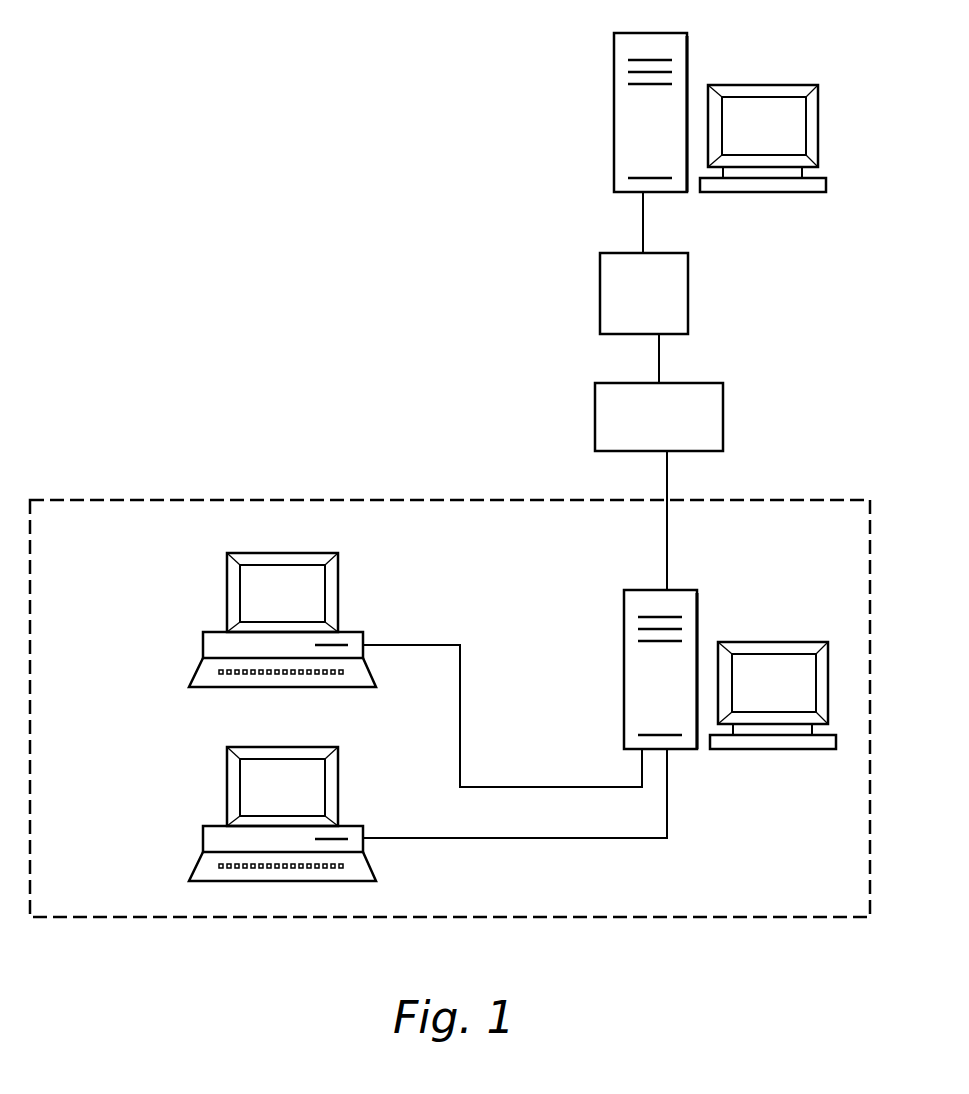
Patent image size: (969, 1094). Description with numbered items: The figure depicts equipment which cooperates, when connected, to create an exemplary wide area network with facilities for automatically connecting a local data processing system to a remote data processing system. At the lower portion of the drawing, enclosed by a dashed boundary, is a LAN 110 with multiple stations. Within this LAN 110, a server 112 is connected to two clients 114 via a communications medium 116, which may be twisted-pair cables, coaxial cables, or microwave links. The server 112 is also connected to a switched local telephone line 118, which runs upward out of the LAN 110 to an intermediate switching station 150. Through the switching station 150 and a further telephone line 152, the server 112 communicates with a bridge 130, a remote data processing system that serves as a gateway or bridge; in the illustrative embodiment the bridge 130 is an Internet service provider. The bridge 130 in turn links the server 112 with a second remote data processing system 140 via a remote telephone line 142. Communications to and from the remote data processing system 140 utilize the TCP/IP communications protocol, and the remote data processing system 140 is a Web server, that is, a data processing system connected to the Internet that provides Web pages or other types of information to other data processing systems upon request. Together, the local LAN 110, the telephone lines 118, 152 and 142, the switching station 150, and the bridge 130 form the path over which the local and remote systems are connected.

The LAN 110 is at (268, 478).
The server 112 is at (697, 606).
The clients 114 is at (203, 645).
The communications medium 116 is at (402, 645).
The switched local telephone line 118 is at (667, 544).
The bridge 130 is at (688, 273).
The remote data processing system 140 is at (687, 52).
The remote telephone line 142 is at (643, 238).
The switching station 150 is at (723, 411).
The telephone line 152 is at (659, 372).